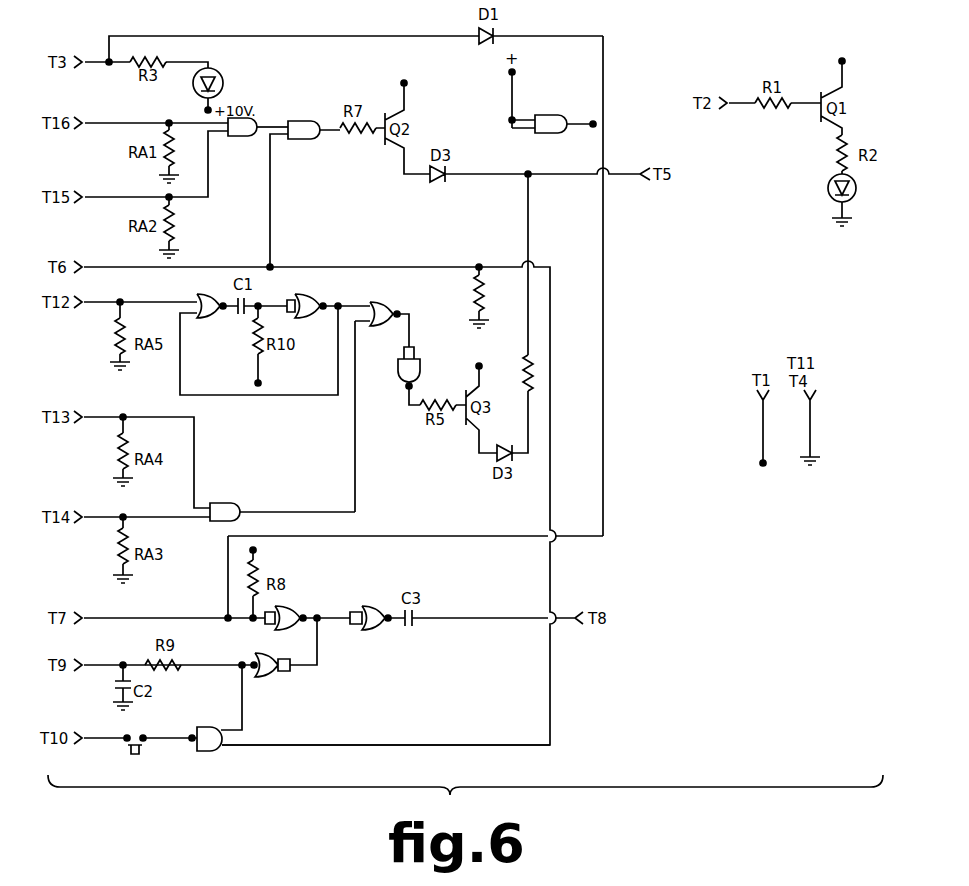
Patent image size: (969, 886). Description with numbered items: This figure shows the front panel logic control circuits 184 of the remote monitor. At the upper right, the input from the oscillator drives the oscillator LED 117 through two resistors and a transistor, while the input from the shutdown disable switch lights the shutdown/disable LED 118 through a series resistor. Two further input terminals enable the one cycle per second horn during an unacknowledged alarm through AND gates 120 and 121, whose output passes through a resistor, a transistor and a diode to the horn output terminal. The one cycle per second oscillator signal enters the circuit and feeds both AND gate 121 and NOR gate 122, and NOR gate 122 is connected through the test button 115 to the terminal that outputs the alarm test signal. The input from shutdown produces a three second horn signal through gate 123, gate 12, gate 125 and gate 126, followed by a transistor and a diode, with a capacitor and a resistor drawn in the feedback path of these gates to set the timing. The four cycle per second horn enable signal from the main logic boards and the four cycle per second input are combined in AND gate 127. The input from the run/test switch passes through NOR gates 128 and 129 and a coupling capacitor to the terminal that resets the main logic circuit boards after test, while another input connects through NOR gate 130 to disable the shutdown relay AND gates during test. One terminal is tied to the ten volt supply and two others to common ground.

The shutdown/disable LED 118 is at (222, 80).
The AND gate 120 is at (240, 136).
The AND gate 121 is at (302, 139).
The NOR gate 12 is at (303, 294).
The gate 123 is at (204, 318).
The gate 125 is at (386, 302).
The gate 126 is at (416, 364).
The AND gate 127 is at (224, 503).
The NOR gate 128 is at (288, 606).
The NOR gate 129 is at (370, 630).
The NOR gate 130 is at (262, 677).
The NOR gate 122 is at (205, 751).
The test button 115 is at (120, 747).
The oscillator LED 117 is at (828, 190).
The front panel logic control circuits 184 is at (619, 328).